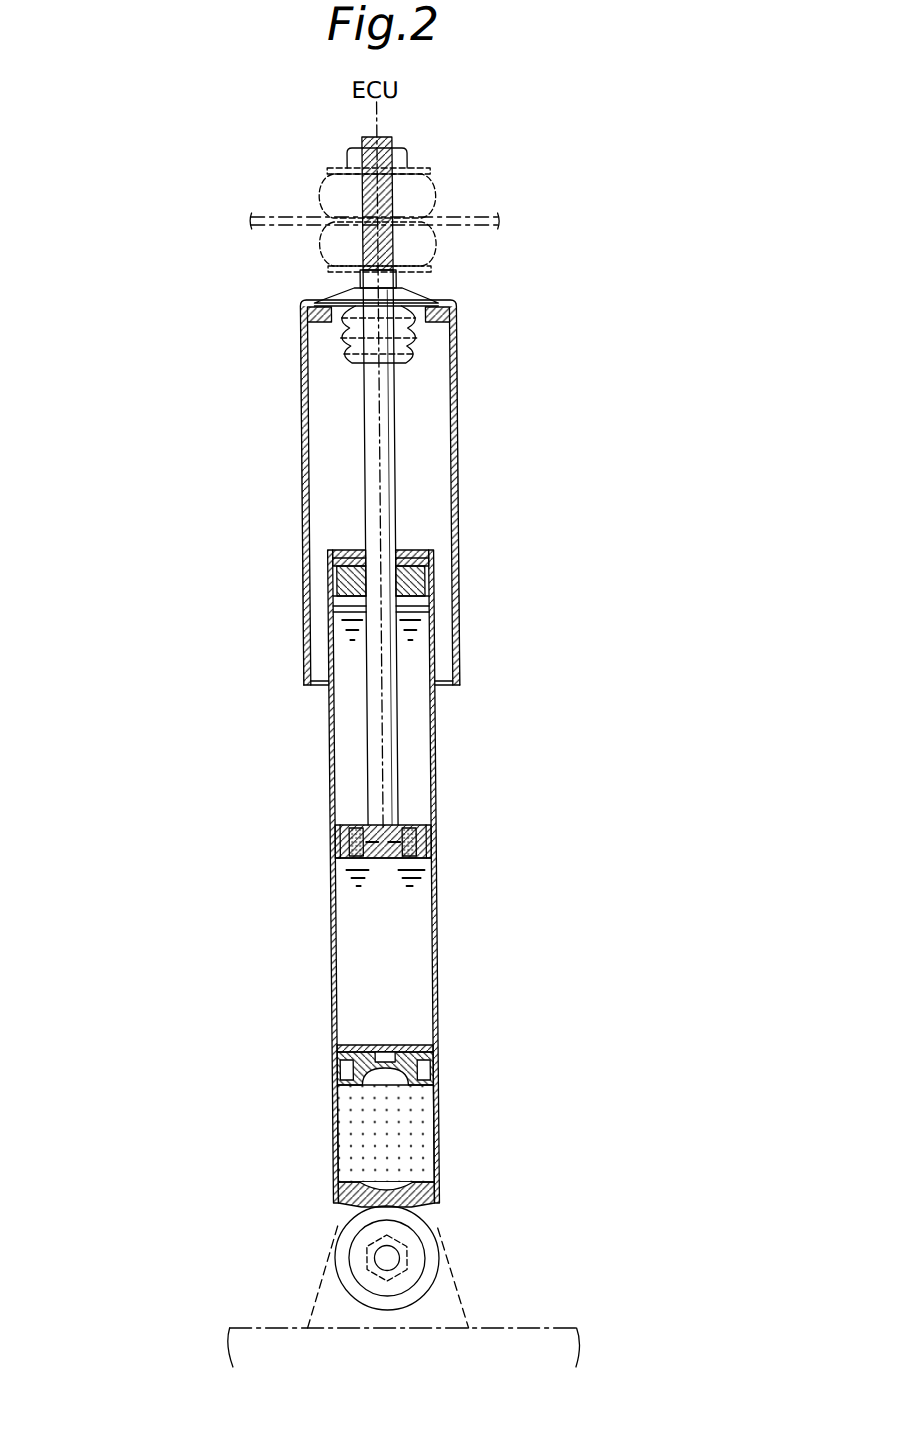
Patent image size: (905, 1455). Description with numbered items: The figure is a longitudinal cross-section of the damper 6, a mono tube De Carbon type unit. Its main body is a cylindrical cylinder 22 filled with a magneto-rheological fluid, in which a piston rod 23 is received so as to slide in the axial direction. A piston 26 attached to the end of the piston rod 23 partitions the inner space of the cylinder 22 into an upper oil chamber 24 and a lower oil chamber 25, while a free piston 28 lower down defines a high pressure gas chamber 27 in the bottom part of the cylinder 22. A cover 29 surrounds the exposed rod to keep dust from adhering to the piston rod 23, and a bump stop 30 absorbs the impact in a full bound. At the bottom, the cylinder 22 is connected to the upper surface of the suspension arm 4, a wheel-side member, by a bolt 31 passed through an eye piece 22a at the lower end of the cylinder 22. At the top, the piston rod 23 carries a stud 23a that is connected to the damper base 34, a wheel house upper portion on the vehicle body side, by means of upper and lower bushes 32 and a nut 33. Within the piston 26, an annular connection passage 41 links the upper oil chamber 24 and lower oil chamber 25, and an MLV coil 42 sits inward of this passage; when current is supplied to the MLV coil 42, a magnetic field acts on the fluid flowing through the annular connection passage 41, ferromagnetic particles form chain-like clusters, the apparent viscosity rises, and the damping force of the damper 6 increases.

The suspension arm 4 is at (507, 1326).
The damper 6 is at (123, 412).
The cylinder 22 is at (325, 912).
The eye piece 22a is at (333, 1245).
The piston rod 23 is at (360, 730).
The stud 23a is at (365, 142).
The upper oil chamber 24 is at (412, 720).
The lower oil chamber 25 is at (410, 945).
The piston 26 is at (347, 823).
The high pressure gas chamber 27 is at (406, 1126).
The free piston 28 is at (335, 1052).
The cover 29 is at (300, 490).
The bump stop 30 is at (354, 356).
The bolt 31 is at (395, 1255).
The upper and lower bushes 32 is at (427, 192).
The nut 33 is at (403, 157).
The damper base 34 is at (280, 220).
The annular connection passage 41 is at (424, 842).
The MLV coil 42 is at (404, 822).